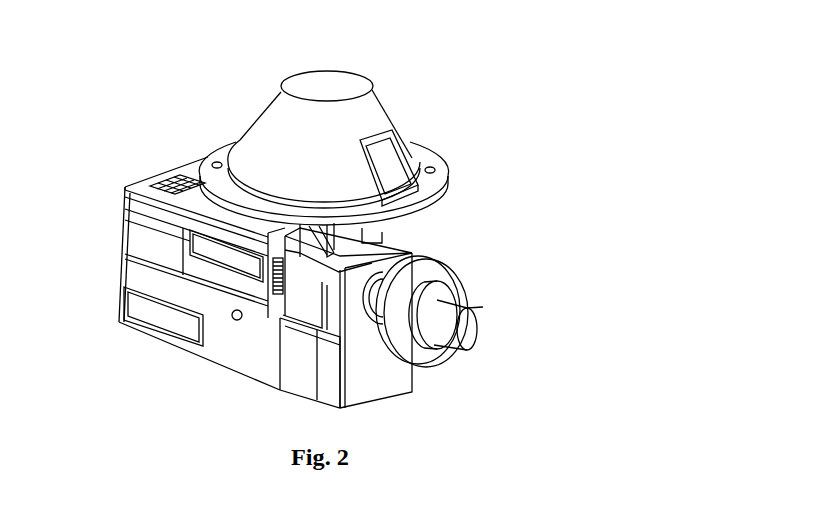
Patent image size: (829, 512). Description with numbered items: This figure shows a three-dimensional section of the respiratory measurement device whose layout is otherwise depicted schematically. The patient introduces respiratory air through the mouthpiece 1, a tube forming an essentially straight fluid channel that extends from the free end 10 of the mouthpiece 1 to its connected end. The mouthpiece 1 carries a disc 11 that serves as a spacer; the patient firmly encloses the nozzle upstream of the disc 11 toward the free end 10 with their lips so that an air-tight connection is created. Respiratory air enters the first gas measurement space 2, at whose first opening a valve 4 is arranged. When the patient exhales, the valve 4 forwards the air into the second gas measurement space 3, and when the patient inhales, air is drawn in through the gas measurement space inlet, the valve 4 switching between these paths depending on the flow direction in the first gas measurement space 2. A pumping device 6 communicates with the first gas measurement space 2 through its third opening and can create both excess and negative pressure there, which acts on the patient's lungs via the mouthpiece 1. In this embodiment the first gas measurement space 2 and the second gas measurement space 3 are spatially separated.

The mouthpiece 1 is at (417, 285).
The first gas measurement space 2 is at (400, 253).
The second gas measurement space 3 is at (192, 270).
The valve 4 is at (272, 302).
The pumping device 6 is at (405, 128).
The free end of mouthpiece 10 is at (470, 330).
The disc 11 is at (424, 357).